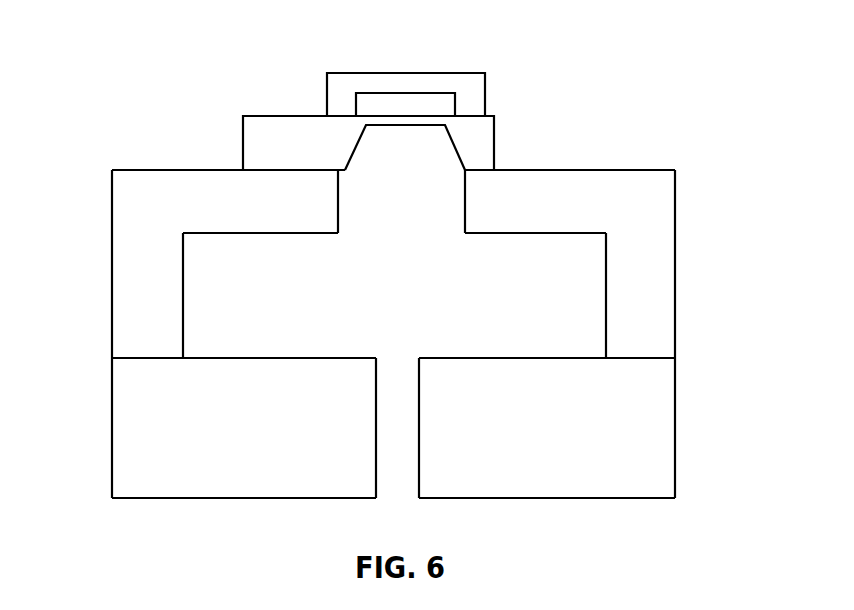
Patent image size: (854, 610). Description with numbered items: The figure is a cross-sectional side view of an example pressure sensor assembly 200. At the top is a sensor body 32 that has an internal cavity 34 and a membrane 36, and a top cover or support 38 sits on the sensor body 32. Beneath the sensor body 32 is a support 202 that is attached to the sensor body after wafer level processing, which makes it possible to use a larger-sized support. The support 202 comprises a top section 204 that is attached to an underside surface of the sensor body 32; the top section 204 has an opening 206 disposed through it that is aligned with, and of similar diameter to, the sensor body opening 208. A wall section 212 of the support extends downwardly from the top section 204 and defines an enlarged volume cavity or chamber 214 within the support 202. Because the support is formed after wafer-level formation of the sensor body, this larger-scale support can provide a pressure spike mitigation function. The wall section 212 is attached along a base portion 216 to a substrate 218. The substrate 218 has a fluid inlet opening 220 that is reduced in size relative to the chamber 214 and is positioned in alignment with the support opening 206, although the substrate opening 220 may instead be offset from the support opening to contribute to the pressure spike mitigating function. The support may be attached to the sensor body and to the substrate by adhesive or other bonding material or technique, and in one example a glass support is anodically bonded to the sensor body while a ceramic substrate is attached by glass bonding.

The pressure sensor assembly 200 is at (613, 105).
The support 202 is at (147, 222).
The top section 204 is at (632, 177).
The opening 206 is at (350, 212).
The sensor body opening 208 is at (363, 165).
The wall section 212 is at (665, 262).
The chamber 214 is at (568, 297).
The base portion 216 is at (645, 358).
The substrate 218 is at (655, 413).
The fluid inlet opening 220 is at (397, 490).
The sensor body 32 is at (241, 147).
The internal cavity 34 is at (432, 148).
The membrane 36 is at (392, 125).
The top cover 38 is at (472, 85).